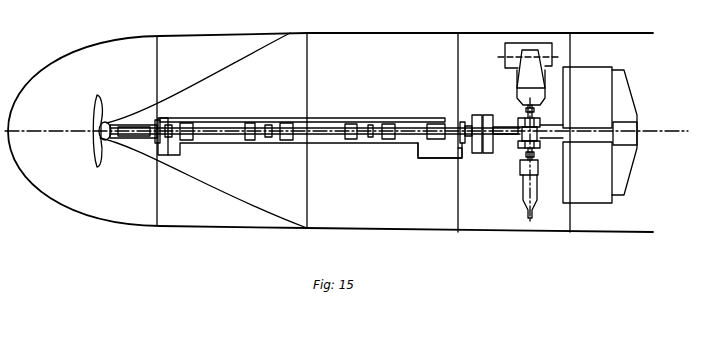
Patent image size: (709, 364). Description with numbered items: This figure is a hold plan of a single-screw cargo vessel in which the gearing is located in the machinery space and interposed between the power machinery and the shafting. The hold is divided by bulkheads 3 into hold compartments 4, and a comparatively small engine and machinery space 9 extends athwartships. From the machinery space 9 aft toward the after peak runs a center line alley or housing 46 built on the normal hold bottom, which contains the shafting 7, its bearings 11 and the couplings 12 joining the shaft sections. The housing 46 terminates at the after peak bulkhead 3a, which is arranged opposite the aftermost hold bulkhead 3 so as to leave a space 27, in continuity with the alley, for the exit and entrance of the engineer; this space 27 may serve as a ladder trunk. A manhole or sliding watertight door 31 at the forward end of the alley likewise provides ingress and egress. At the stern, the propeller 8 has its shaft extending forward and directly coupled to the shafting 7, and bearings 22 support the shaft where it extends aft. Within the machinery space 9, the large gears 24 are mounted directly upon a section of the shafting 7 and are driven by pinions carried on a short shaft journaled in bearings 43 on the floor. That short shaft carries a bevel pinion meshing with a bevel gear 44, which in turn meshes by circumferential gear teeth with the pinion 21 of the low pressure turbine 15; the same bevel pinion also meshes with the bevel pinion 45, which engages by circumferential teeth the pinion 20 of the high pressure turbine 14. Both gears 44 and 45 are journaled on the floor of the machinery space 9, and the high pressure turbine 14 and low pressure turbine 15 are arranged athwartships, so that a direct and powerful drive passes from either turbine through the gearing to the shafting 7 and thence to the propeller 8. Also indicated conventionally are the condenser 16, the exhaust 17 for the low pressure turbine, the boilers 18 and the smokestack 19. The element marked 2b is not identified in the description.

The bulkheads 3 is at (167, 152).
The after peak bulkhead 3a is at (158, 108).
The propeller 8 is at (93, 149).
The stern tube 2b is at (138, 126).
The space 27 is at (162, 148).
The center line alley or housing 46 is at (248, 118).
The shafting 7 is at (328, 128).
The bearings 11 is at (388, 127).
The coupling 12 is at (371, 140).
The manholes or sliding watertight doors 31 is at (456, 153).
The hold compartments 4 is at (462, 122).
The large gears 24 is at (488, 154).
The bearings 43 is at (499, 126).
The bearings 22 is at (509, 135).
The pinion of the low pressure turbine 21 is at (538, 121).
The pinion of the high pressure turbine 20 is at (538, 146).
The condenser 16 is at (549, 50).
The exhaust for the low pressure turbine 17 is at (522, 68).
The low pressure turbine 15 is at (517, 92).
The high pressure turbine 14 is at (532, 188).
The boilers 18 is at (600, 135).
The smokestack 19 is at (628, 127).
The bevel gear 44 is at (541, 125).
The bevel pinion 45 is at (541, 138).
The engine and machinery space 9 is at (478, 211).